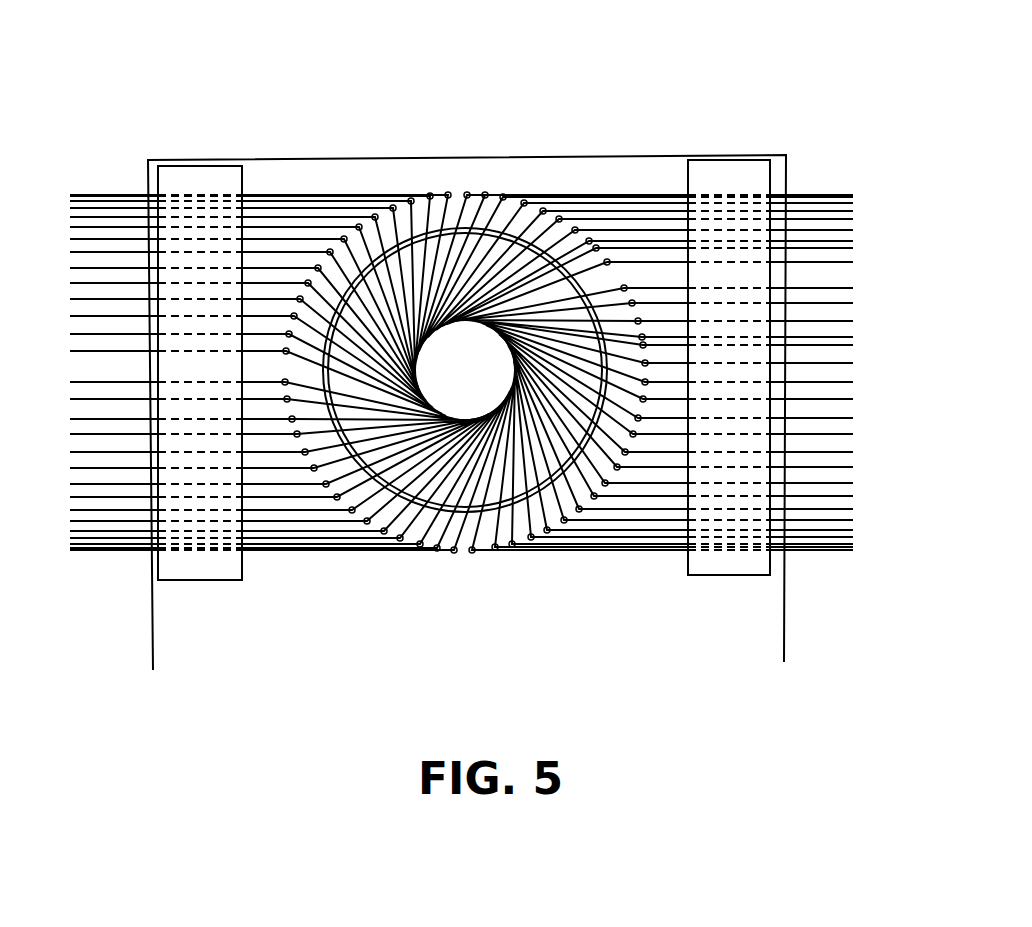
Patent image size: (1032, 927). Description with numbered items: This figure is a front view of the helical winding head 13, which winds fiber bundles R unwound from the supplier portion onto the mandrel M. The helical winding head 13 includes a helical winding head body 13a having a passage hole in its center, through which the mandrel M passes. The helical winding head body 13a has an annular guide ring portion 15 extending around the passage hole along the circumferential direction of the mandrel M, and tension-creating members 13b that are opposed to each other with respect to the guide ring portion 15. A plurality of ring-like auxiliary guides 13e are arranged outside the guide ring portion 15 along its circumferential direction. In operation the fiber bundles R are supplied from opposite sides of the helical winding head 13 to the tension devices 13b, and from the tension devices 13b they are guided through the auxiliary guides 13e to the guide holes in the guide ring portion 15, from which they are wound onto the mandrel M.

The helical winding head 13 is at (343, 163).
The helical winding head body 13a is at (770, 627).
The tension-creating members 13b is at (196, 172).
The ring-like auxiliary guides 13e is at (483, 190).
The annular guide ring portion 15 is at (482, 507).
The mandrel M is at (450, 397).
The fiber bundles R is at (93, 380).